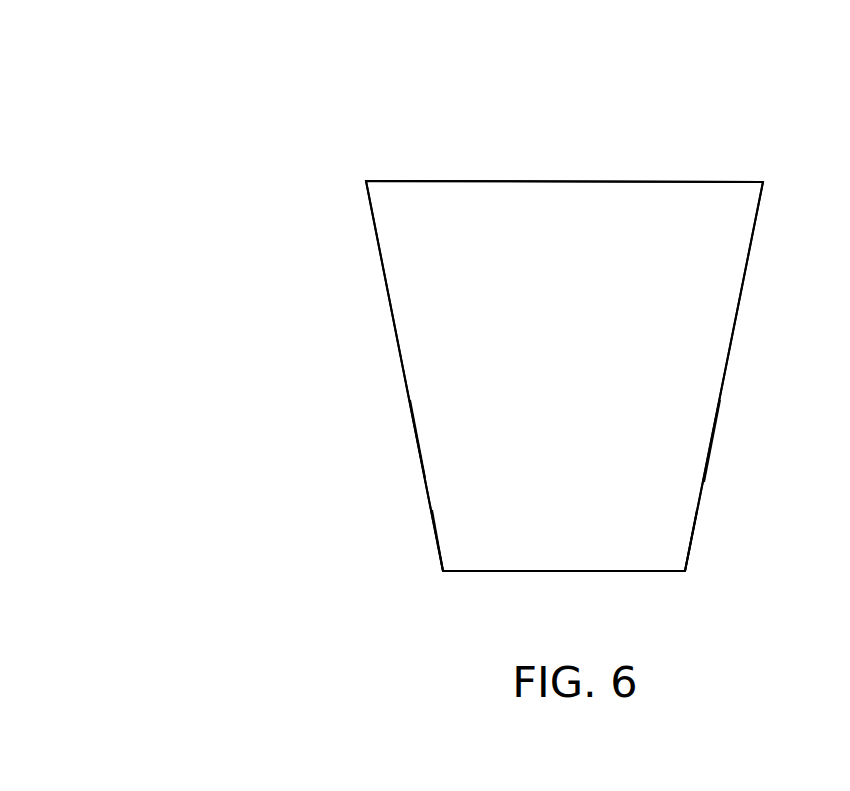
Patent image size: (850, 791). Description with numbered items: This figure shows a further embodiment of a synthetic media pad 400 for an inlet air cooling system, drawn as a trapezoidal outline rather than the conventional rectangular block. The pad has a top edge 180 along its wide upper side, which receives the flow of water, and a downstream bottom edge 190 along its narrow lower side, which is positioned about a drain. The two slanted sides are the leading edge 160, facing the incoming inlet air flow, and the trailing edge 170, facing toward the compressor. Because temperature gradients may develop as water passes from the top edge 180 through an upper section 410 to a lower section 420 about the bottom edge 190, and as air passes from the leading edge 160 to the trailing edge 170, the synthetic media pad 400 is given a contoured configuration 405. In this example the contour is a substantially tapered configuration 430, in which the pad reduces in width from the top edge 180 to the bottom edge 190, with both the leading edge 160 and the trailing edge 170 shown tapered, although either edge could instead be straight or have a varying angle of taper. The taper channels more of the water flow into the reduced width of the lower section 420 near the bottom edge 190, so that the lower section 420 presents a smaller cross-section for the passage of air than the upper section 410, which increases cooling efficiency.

The synthetic media pad 400 is at (400, 62).
The contoured configuration 405 is at (382, 320).
The upper section 410 is at (750, 262).
The lower section 420 is at (704, 482).
The tapered configuration 430 is at (425, 478).
The leading edge 160 is at (437, 545).
The trailing edge 170 is at (692, 546).
The top edge 180 is at (737, 182).
The bottom edge 190 is at (661, 571).